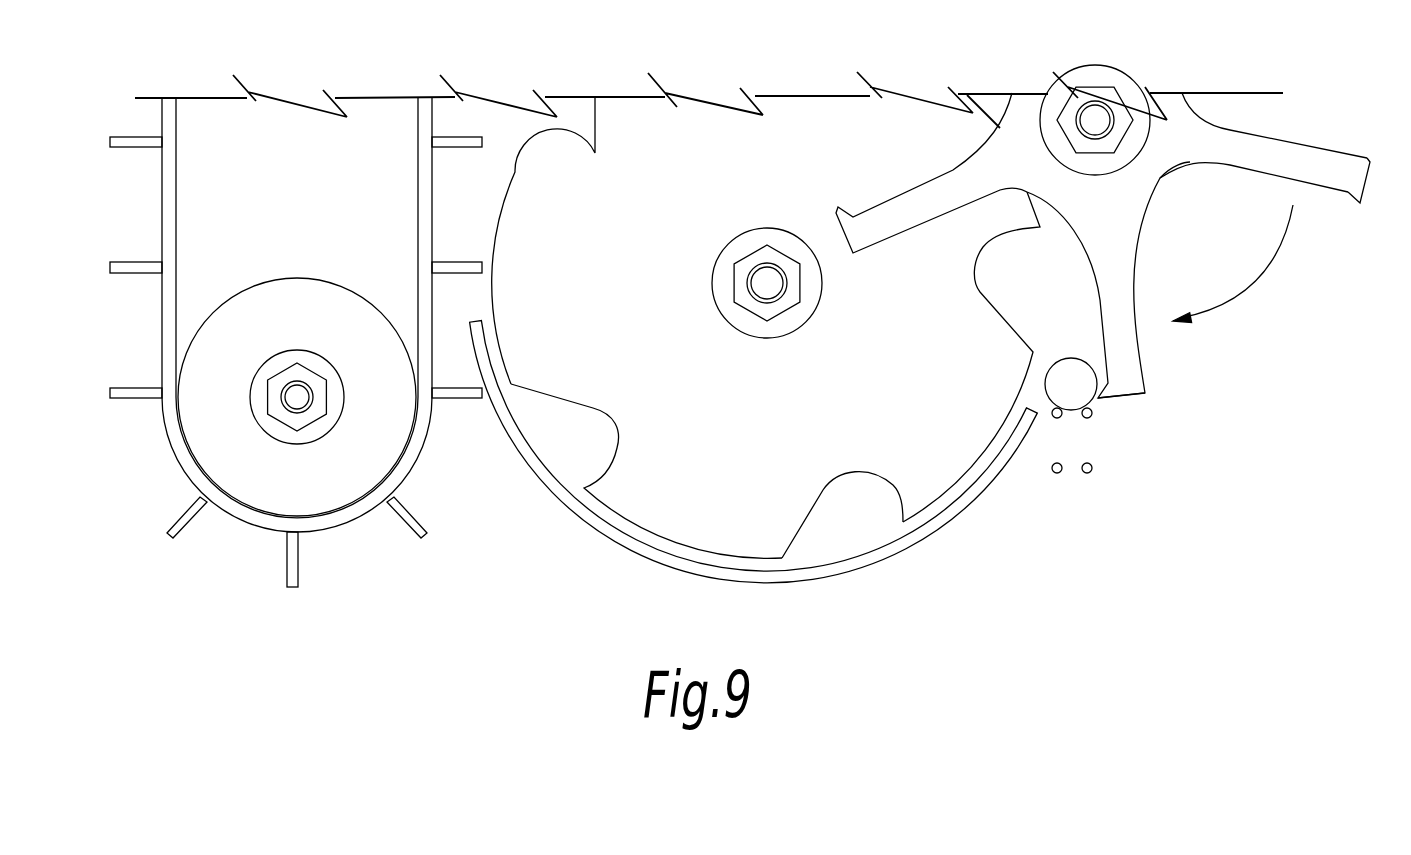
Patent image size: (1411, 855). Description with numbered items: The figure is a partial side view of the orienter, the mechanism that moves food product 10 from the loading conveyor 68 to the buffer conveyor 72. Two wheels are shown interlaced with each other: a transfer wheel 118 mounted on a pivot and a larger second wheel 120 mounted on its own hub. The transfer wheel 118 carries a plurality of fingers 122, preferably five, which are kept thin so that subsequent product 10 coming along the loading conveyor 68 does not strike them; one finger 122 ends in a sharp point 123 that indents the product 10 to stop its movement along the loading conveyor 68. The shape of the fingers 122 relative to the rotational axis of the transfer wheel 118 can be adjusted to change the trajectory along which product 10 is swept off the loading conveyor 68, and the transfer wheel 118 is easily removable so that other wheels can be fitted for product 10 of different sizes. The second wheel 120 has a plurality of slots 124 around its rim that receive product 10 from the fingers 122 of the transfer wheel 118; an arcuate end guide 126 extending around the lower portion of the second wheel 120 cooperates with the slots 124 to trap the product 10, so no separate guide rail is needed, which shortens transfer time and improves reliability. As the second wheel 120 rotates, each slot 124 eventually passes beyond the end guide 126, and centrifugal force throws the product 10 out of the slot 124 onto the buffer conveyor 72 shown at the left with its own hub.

The buffer conveyor 72 is at (162, 192).
The second wheel 120 is at (685, 130).
The transfer wheel 118 is at (1163, 108).
The fingers 122 is at (1348, 156).
The sharp point 123 is at (1348, 194).
The product 10 is at (1072, 400).
The loading conveyor 68 is at (1085, 483).
The slots 124 is at (868, 517).
The end guide 126 is at (637, 552).